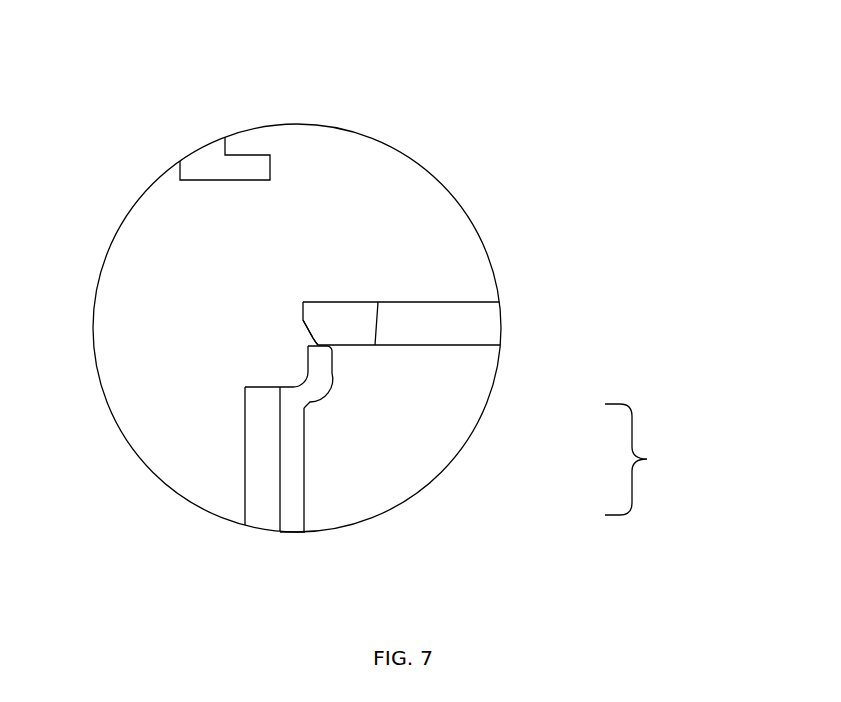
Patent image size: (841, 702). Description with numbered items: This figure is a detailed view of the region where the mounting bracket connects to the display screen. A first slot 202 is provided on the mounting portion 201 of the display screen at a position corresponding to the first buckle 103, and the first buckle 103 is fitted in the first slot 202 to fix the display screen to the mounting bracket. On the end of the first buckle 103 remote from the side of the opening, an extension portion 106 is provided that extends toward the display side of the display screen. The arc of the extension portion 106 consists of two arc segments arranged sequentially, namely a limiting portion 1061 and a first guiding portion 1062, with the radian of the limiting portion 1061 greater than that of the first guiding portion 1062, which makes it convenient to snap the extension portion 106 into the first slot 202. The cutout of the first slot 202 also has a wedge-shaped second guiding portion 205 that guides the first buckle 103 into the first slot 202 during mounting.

The first slot 202 is at (273, 247).
The mounting portion 201 is at (440, 314).
The second guiding portion 205 is at (317, 335).
The first guiding portion 1062 is at (330, 370).
The limiting portion 1061 is at (310, 408).
The first buckle 103 is at (303, 503).
The extension portion 106 is at (671, 459).